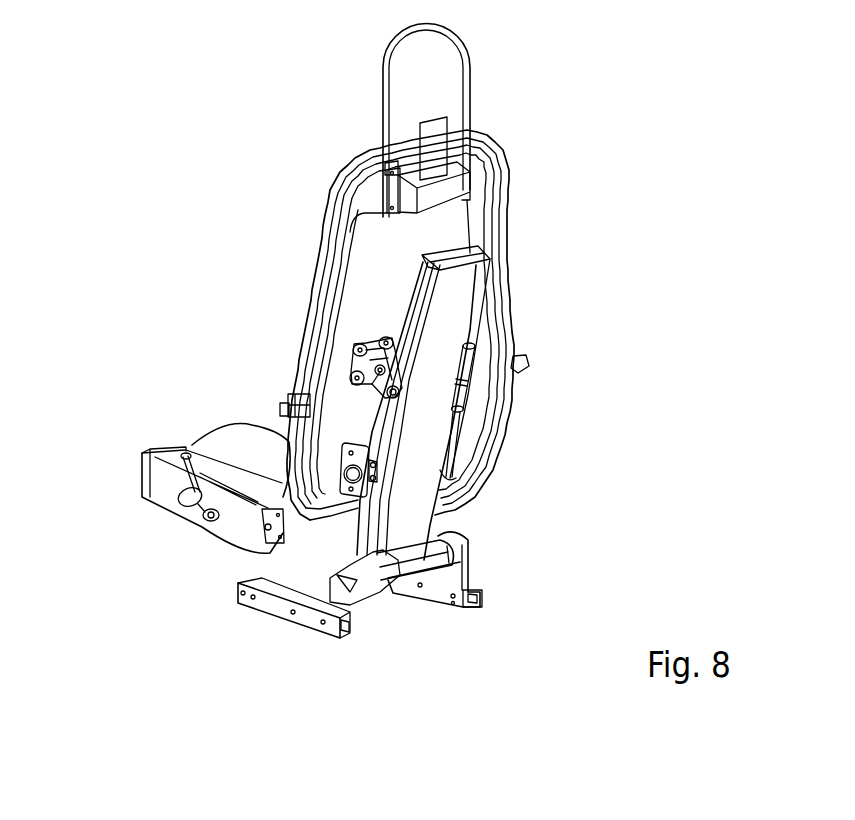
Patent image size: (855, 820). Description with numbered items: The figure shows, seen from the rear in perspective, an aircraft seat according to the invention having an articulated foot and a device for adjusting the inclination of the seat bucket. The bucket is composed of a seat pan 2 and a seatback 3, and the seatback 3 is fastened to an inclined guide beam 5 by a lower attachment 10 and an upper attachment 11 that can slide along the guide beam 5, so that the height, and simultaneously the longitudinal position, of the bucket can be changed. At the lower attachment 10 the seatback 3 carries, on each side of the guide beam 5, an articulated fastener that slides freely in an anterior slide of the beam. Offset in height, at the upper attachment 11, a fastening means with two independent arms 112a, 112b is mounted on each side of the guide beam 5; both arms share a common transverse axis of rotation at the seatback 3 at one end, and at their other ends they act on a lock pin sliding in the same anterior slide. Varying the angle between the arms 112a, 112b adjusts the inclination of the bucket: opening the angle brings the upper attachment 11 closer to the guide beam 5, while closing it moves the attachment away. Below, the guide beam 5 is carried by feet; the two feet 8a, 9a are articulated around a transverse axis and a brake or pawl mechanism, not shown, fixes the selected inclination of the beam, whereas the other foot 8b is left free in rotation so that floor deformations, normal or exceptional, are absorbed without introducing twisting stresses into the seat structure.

The seat pan 2 is at (197, 445).
The seatback 3 is at (330, 263).
The guide beam 5 is at (458, 315).
The foot 8a is at (482, 583).
The foot 8b is at (320, 627).
The foot 9a is at (240, 603).
The lower attachment 10 is at (363, 450).
The upper attachment 11 is at (466, 350).
The arm 112a is at (400, 368).
The arm 112b is at (413, 393).